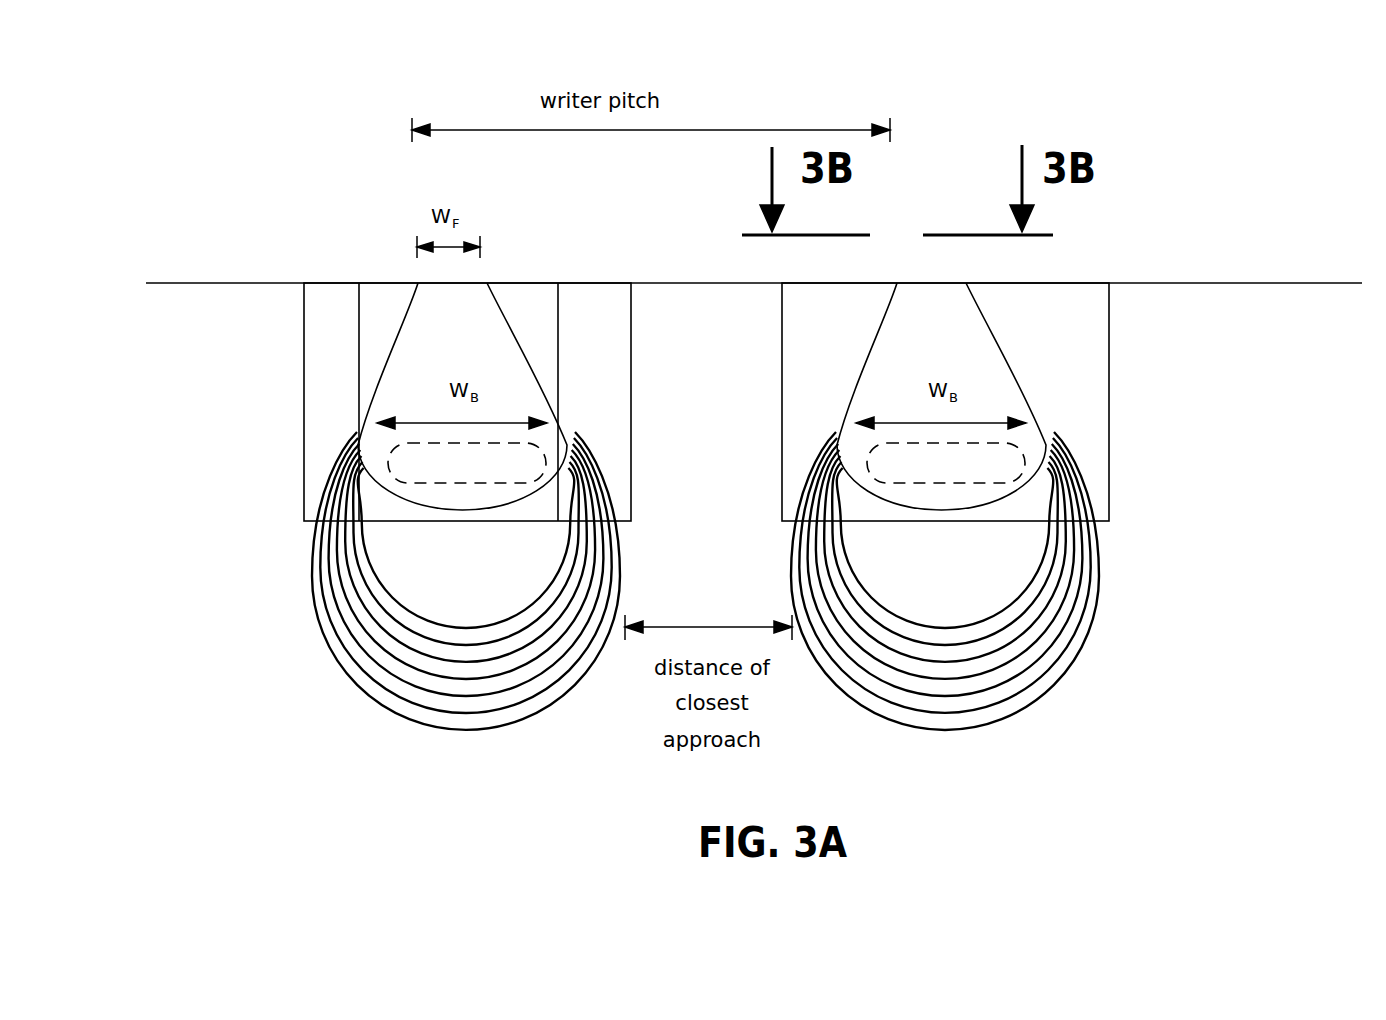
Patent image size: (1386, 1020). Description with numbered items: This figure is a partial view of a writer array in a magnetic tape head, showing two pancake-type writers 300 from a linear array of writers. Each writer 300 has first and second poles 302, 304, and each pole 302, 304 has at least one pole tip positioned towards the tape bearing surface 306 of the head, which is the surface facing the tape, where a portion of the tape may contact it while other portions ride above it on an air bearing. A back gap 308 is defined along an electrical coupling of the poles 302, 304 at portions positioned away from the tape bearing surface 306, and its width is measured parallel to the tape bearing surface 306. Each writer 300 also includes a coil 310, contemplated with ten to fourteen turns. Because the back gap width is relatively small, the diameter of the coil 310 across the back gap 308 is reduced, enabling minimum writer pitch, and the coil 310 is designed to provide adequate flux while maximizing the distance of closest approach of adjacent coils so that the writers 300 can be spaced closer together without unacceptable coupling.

The pancake-type writer 300 is at (92, 307).
The first pole 302 is at (942, 332).
The second pole 304 is at (1109, 408).
The tape bearing surface 306 is at (650, 283).
The back gap 308 is at (460, 483).
The coil 310 is at (620, 553).